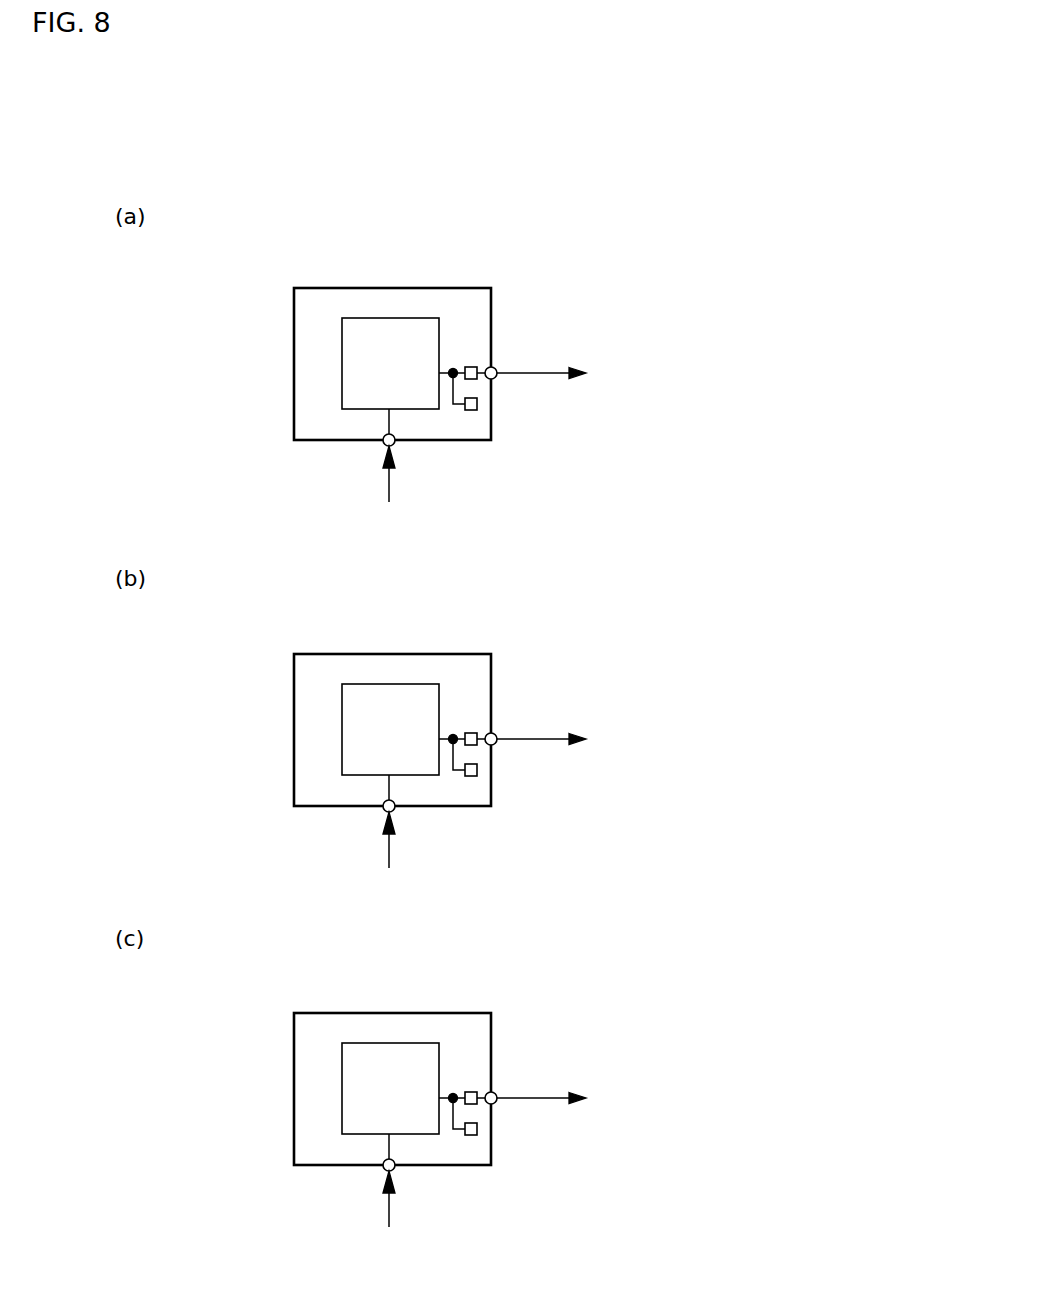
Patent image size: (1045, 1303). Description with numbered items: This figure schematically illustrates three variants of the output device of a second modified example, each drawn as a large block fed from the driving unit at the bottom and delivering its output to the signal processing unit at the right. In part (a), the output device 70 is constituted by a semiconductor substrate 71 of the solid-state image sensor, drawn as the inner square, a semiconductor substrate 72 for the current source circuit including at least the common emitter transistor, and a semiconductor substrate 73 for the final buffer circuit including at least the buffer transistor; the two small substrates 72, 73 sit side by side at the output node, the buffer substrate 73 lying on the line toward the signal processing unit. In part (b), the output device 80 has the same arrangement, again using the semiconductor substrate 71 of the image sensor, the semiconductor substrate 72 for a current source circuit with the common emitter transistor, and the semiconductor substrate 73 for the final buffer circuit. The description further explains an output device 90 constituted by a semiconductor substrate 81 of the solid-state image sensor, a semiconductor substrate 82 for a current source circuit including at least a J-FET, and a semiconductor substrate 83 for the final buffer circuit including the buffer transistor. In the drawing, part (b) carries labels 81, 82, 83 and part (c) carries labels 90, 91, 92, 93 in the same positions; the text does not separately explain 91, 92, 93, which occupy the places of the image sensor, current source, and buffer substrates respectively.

The output device 70 is at (549, 410).
The semiconductor substrate 71 is at (384, 327).
The semiconductor substrate 72 is at (477, 403).
The semiconductor substrate 73 is at (471, 368).
The output device 80 is at (549, 776).
The semiconductor substrate 81 is at (384, 693).
The semiconductor substrate 82 is at (477, 769).
The semiconductor substrate 83 is at (471, 734).
The output device 90 is at (549, 1135).
The photodetector element 91 is at (384, 1052).
The terminal 92 is at (477, 1128).
The terminal 93 is at (471, 1093).